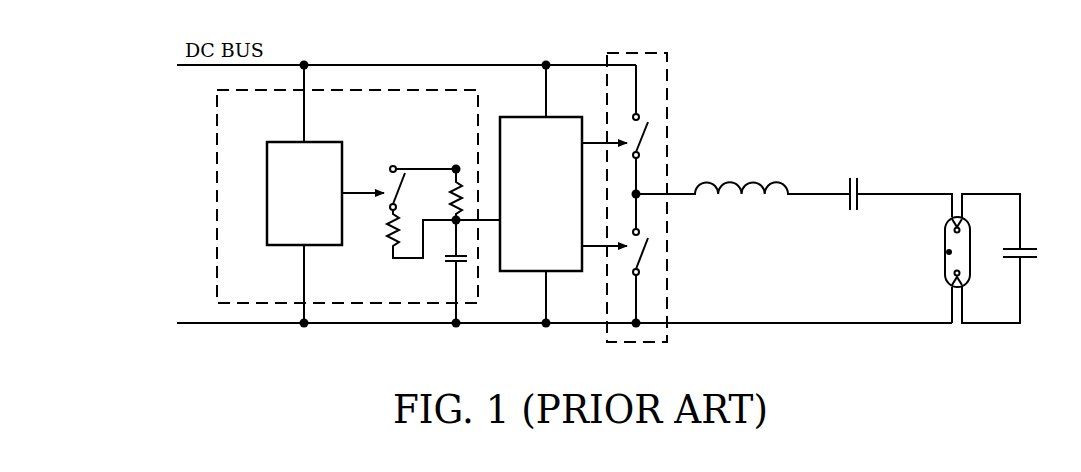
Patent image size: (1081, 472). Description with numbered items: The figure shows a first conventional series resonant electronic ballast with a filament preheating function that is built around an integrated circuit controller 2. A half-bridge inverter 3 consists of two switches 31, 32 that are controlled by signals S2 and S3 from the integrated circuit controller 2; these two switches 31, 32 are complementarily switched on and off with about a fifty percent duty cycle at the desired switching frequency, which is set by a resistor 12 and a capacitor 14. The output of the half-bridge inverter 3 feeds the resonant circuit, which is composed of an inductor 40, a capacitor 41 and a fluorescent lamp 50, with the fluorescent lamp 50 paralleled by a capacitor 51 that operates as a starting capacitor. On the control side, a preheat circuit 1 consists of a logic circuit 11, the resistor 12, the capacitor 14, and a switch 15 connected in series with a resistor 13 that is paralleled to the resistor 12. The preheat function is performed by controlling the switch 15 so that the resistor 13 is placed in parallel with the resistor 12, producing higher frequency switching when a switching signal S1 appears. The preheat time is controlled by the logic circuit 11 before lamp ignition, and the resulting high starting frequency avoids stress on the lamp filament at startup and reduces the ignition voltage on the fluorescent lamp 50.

The preheat circuit 1 is at (215, 125).
The logic circuit 11 is at (290, 142).
The resistor 12 is at (452, 172).
The resistor 13 is at (388, 240).
The capacitor 14 is at (449, 264).
The switch 15 is at (395, 197).
The integrated circuit controller 2 is at (523, 116).
The half-bridge inverter 3 is at (668, 83).
The switch 31 is at (644, 141).
The switch 32 is at (644, 257).
The inductor 40 is at (738, 176).
The capacitor 41 is at (860, 180).
The fluorescent lamp 50 is at (945, 260).
The capacitor 51 is at (1031, 245).
The switching signal S1 is at (358, 190).
The signal S2 is at (597, 140).
The signal S3 is at (597, 248).